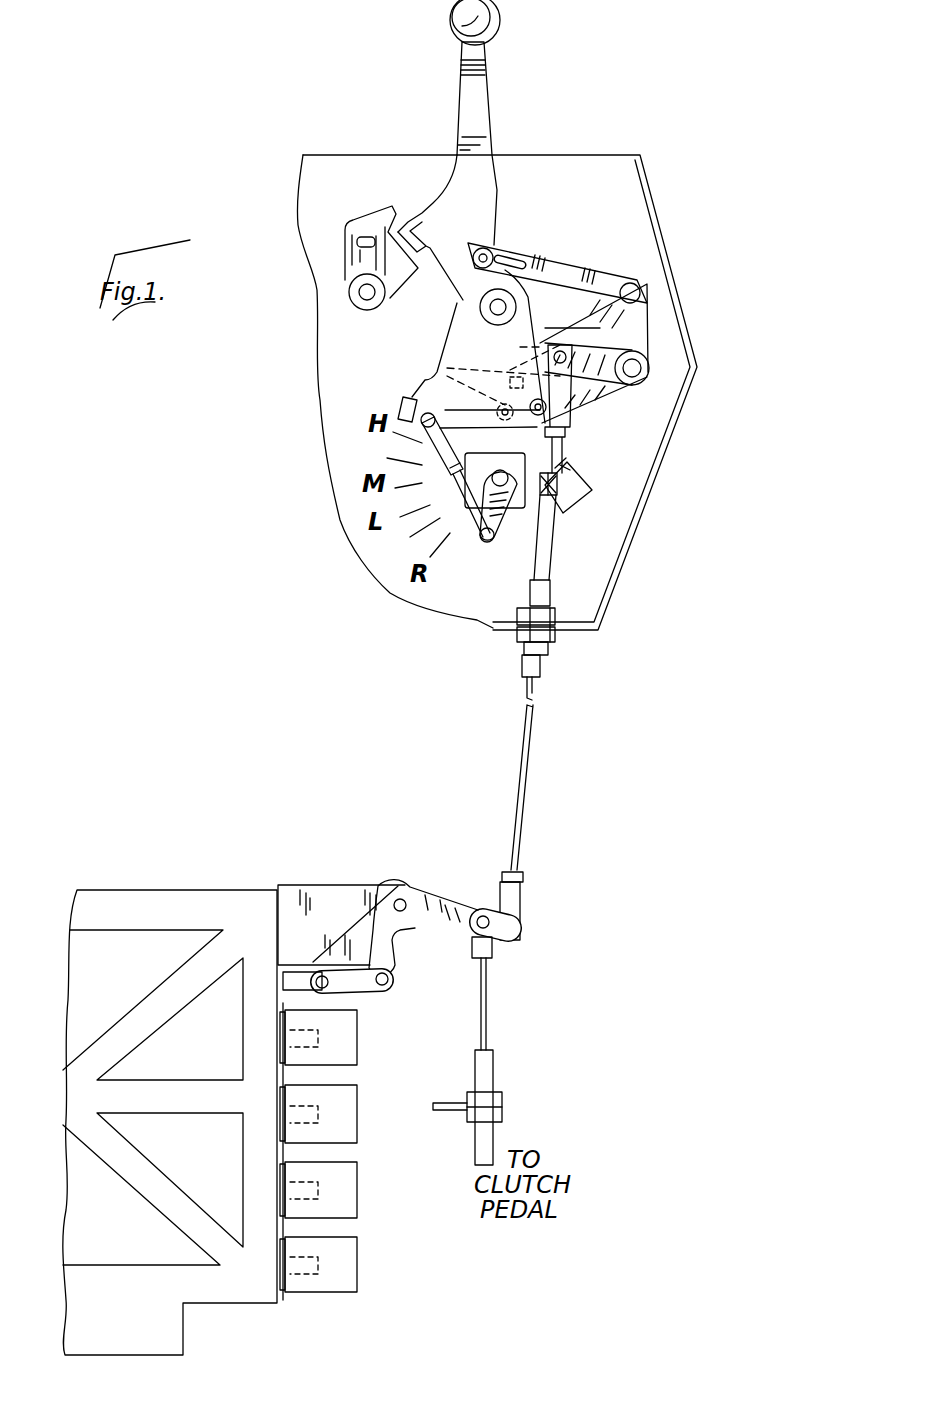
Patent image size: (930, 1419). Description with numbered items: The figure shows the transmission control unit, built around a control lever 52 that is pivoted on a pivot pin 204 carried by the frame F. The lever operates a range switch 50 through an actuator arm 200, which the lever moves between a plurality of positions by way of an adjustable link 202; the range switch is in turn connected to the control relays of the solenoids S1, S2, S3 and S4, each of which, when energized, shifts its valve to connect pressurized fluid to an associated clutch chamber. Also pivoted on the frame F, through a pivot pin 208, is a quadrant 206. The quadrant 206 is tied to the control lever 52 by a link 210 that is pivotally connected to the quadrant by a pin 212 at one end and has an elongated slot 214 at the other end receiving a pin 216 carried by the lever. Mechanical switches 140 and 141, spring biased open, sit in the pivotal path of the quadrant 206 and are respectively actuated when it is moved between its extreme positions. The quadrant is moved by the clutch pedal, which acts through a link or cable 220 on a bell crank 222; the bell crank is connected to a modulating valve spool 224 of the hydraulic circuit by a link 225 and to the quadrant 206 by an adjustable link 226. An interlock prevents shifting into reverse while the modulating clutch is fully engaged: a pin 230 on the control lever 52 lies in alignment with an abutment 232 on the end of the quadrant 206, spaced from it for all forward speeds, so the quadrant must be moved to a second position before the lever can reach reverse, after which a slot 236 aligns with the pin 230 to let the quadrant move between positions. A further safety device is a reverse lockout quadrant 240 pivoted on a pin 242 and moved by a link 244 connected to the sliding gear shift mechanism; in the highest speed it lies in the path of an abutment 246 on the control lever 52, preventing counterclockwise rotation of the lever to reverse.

The frame F is at (317, 215).
The control lever 52 is at (472, 105).
The reverse lockout quadrant 240 is at (378, 222).
The abutment 246 is at (417, 220).
The link 244 is at (367, 240).
The pin 242 is at (357, 292).
The pivot pin 204 is at (480, 307).
The link 210 is at (557, 272).
The pin 216 is at (481, 243).
The elongated slot 214 is at (512, 265).
The pin 212 is at (637, 273).
The pivot pin 208 is at (646, 374).
The quadrant 206 is at (596, 398).
The mechanical switch 141 is at (560, 345).
The abutment 232 is at (448, 365).
The slot 236 is at (533, 358).
The pin 230 is at (497, 412).
The adjustable link 202 is at (422, 453).
The actuator arm 200 is at (503, 522).
The range switch 50 is at (520, 500).
The mechanical switch 140 is at (587, 478).
The adjustable link 226 is at (518, 838).
The bell crank 222 is at (437, 896).
The modulating valve spool 224 is at (300, 963).
The link 225 is at (362, 992).
The link or cable 220 is at (487, 1063).
The solenoid S1 is at (357, 1265).
The solenoid S2 is at (357, 1191).
The solenoid S3 is at (357, 1118).
The solenoid S4 is at (357, 1043).